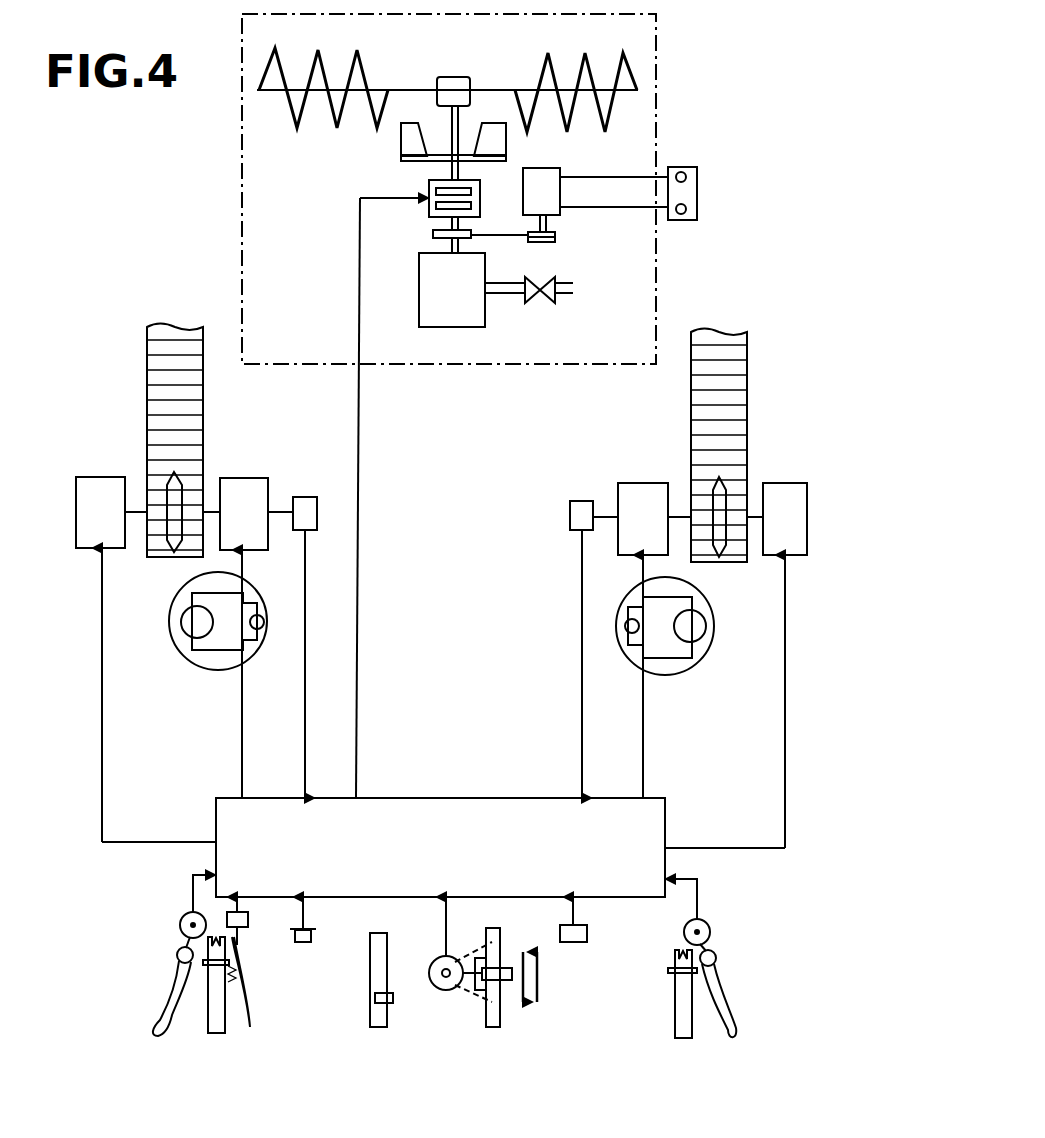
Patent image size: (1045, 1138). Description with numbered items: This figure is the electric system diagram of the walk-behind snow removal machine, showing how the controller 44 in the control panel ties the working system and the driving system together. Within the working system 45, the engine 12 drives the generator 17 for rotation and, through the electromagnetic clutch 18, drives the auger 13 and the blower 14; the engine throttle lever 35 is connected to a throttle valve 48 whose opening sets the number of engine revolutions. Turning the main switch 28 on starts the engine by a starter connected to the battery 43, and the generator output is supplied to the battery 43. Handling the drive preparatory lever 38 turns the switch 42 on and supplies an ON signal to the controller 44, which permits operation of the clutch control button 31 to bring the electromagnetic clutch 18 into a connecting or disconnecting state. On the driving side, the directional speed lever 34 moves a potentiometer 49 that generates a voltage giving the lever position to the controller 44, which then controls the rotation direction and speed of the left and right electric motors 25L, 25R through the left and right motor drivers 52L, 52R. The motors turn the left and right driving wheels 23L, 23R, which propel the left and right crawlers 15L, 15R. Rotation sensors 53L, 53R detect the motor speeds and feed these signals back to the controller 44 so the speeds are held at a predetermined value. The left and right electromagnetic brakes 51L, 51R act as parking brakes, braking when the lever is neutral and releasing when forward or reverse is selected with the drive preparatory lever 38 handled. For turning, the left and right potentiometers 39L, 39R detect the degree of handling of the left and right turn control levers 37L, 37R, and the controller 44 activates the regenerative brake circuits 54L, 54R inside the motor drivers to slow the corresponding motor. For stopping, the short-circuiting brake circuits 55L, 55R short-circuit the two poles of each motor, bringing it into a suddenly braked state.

The engine 12 is at (437, 310).
The auger 13 is at (487, 90).
The blower 14 is at (405, 140).
The left crawler 15L is at (167, 383).
The right crawler 15R is at (727, 395).
The generator 17 is at (552, 200).
The electromagnetic clutch 18 is at (429, 208).
The left driving wheel 23L is at (172, 487).
The right driving wheel 23R is at (722, 490).
The left electric motor 25L is at (238, 478).
The right electric motor 25R is at (637, 483).
The main switch 28 is at (573, 942).
The clutch control button 31 is at (302, 945).
The directional speed lever 34 is at (507, 985).
The engine throttle lever 35 is at (393, 1005).
The left turn control lever 37L is at (155, 1035).
The right turn control lever 37R is at (736, 1034).
The drive preparatory lever 38 is at (250, 1015).
The left potentiometer 39L is at (181, 917).
The right potentiometer 39R is at (710, 928).
The switch 42 is at (248, 922).
The battery 43 is at (697, 190).
The controller 44 is at (617, 873).
The working system 45 is at (657, 33).
The throttle valve 48 is at (562, 305).
The potentiometer 49 is at (446, 990).
The left electromagnetic brake 51L is at (90, 498).
The right electromagnetic brake 51R is at (787, 502).
The left motor driver 52L is at (205, 668).
The right motor driver 52R is at (682, 673).
The left rotation sensor 53L is at (305, 497).
The right rotation sensor 53R is at (578, 501).
The left regenerative brake circuit 54L is at (188, 628).
The right regenerative brake circuit 54R is at (697, 630).
The left short-circuiting brake circuit 55L is at (268, 611).
The right short-circuiting brake circuit 55R is at (625, 620).